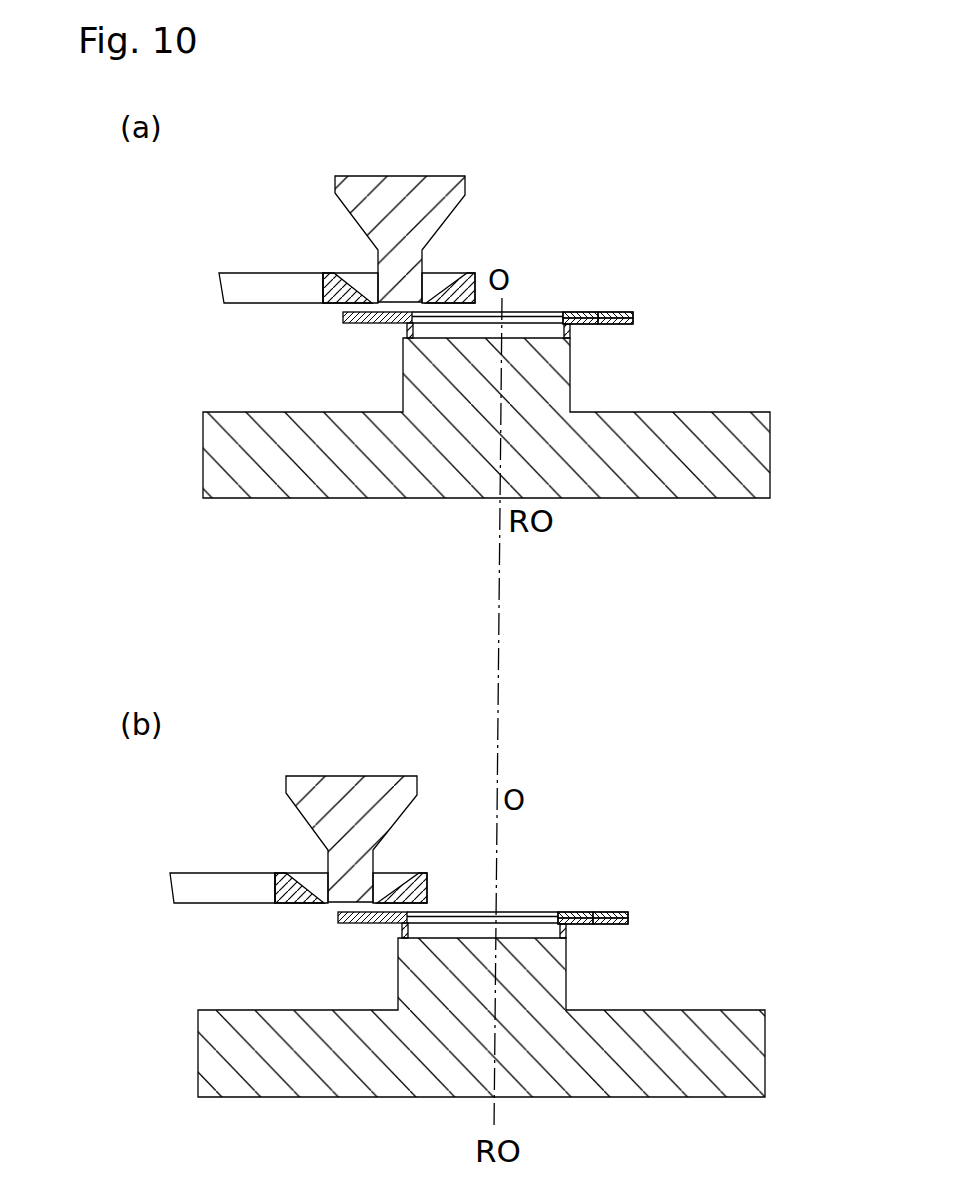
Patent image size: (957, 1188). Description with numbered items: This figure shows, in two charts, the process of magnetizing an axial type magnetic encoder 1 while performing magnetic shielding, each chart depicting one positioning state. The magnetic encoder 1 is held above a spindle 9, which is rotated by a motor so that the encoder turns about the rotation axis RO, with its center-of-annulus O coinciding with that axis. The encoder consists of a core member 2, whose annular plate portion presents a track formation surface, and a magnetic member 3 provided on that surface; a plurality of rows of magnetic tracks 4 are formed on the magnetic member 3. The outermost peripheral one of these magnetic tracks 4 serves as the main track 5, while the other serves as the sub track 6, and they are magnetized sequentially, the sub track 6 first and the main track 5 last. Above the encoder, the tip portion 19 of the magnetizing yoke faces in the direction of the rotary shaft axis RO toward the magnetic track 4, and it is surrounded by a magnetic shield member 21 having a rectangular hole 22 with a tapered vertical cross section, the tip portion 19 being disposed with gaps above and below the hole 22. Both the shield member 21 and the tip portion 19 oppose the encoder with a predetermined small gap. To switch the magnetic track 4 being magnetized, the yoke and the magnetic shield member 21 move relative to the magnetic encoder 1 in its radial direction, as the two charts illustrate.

The magnetic encoder 1 is at (540, 312).
The core member 2 is at (606, 326).
The magnetic member 3 is at (343, 317).
The magnetic tracks 4 is at (595, 573).
The main track 5 is at (633, 307).
The sub track 6 is at (597, 307).
The spindle 9 is at (770, 458).
The tip portion 19 is at (387, 257).
The magnetic shield member 21 is at (470, 276).
The rectangular hole 22 is at (355, 278).